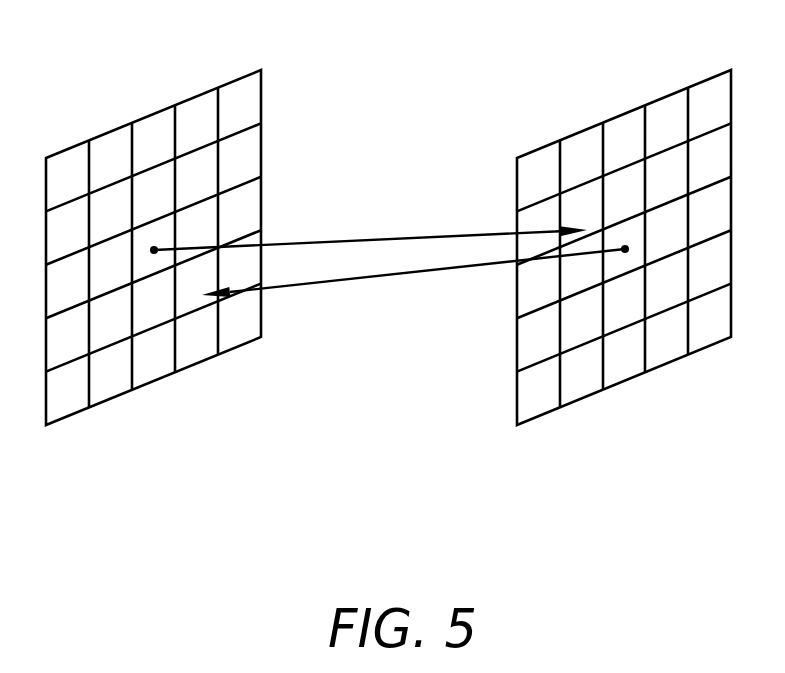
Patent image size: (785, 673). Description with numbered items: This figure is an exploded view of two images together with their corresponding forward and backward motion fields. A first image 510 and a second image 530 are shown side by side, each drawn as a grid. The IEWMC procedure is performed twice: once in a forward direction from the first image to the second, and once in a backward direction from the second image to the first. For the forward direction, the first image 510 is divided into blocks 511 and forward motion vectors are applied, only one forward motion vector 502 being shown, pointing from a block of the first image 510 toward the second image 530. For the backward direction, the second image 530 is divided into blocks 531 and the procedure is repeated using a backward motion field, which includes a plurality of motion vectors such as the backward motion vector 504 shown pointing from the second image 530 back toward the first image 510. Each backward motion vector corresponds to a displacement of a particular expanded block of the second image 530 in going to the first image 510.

The first image 510 is at (155, 63).
The blocks 511 is at (143, 242).
The second image 530 is at (636, 54).
The blocks 531 is at (622, 236).
The forward motion vector 502 is at (372, 240).
The backward motion vector 504 is at (395, 277).